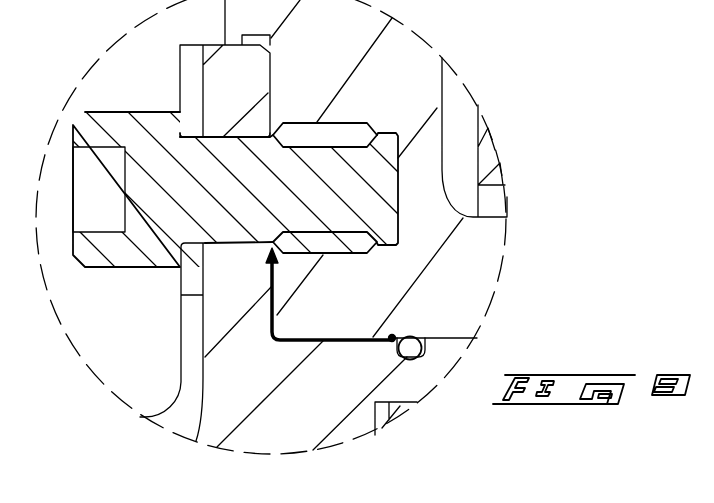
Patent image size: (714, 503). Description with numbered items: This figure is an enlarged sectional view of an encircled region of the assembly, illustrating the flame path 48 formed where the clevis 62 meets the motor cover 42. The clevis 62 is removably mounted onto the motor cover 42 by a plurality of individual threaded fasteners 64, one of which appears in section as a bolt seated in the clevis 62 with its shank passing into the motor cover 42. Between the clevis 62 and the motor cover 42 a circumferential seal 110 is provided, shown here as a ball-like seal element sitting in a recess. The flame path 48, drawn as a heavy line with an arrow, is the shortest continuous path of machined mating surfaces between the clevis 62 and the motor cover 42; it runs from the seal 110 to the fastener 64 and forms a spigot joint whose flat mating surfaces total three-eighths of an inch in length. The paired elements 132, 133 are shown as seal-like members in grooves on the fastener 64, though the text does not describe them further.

The motor cover 42 is at (300, 58).
The flame path 48 is at (302, 338).
The clevis 62 is at (282, 417).
The threaded clevis bolt 64 is at (118, 122).
The circumferential seal 110 is at (413, 343).
The seal 132 is at (433, 161).
The seal 133 is at (325, 242).